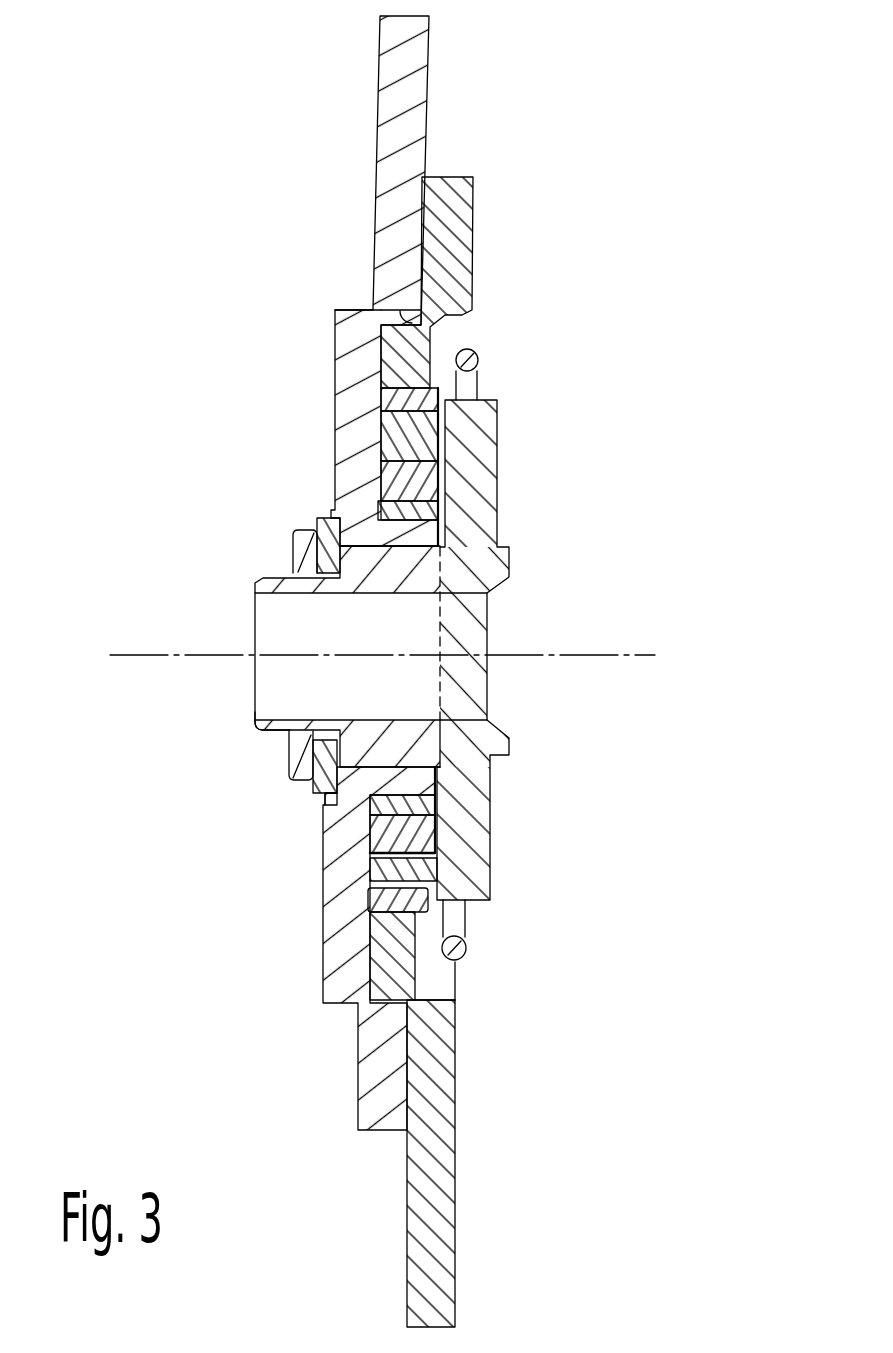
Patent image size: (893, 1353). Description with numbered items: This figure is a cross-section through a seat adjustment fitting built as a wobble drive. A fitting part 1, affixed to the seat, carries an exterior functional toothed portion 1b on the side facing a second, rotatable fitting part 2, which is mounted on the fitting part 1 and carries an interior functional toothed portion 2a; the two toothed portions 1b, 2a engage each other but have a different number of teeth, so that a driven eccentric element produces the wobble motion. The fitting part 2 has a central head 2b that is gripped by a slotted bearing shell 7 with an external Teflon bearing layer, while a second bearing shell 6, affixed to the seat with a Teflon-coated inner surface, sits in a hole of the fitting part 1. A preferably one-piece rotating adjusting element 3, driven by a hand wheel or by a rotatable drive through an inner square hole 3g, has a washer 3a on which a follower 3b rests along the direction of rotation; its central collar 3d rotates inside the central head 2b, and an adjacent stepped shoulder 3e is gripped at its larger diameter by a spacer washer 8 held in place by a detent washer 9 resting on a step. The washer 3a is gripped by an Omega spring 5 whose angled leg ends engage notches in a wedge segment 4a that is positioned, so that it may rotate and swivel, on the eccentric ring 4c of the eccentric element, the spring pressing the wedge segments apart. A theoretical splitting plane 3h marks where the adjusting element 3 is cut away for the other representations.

The fitting part 1 is at (477, 264).
The functional toothed portion 1b is at (412, 312).
The fitting part 2 is at (430, 107).
The functional toothed portion 2a is at (378, 347).
The central head 2b is at (425, 533).
The rotating adjusting element 3 is at (499, 502).
The washer 3a is at (477, 845).
The follower 3b is at (395, 865).
The central collar 3d is at (320, 800).
The stepped shoulder 3e is at (287, 734).
The inner square hole 3g is at (253, 712).
The theoretical splitting plane 3h is at (440, 627).
The wedge segment 4a is at (413, 437).
The eccentric ring 4c is at (428, 478).
The Omega spring 5 is at (475, 353).
The second bearing shell 6 is at (430, 397).
The bearing shell 7 is at (430, 805).
The spacer washer 8 is at (315, 790).
The detent washer 9 is at (297, 787).